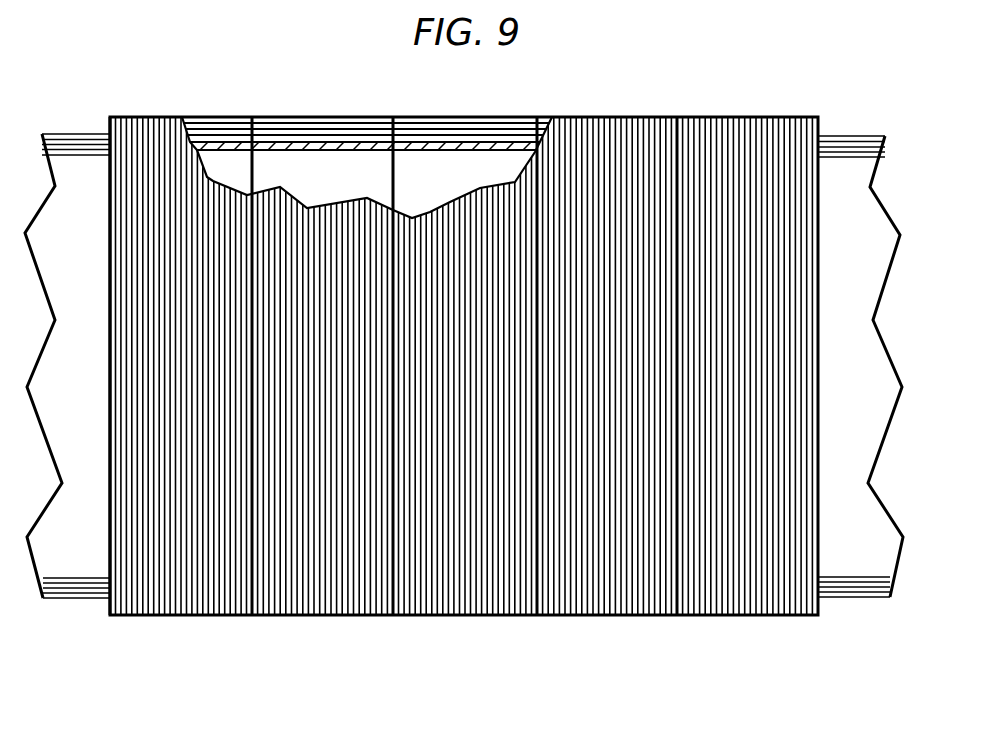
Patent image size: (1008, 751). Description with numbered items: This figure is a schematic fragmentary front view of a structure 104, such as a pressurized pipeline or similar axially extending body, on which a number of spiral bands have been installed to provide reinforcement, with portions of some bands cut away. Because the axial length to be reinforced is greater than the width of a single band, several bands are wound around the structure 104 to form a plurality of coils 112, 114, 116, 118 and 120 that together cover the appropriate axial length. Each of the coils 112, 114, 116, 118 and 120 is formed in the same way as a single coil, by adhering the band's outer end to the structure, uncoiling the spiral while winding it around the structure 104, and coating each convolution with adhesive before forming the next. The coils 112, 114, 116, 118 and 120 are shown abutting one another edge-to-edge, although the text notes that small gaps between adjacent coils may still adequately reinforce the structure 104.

The structure 104 is at (841, 162).
The coil 112 is at (205, 602).
The coil 114 is at (350, 602).
The coil 116 is at (490, 602).
The coil 118 is at (632, 602).
The coil 120 is at (775, 602).